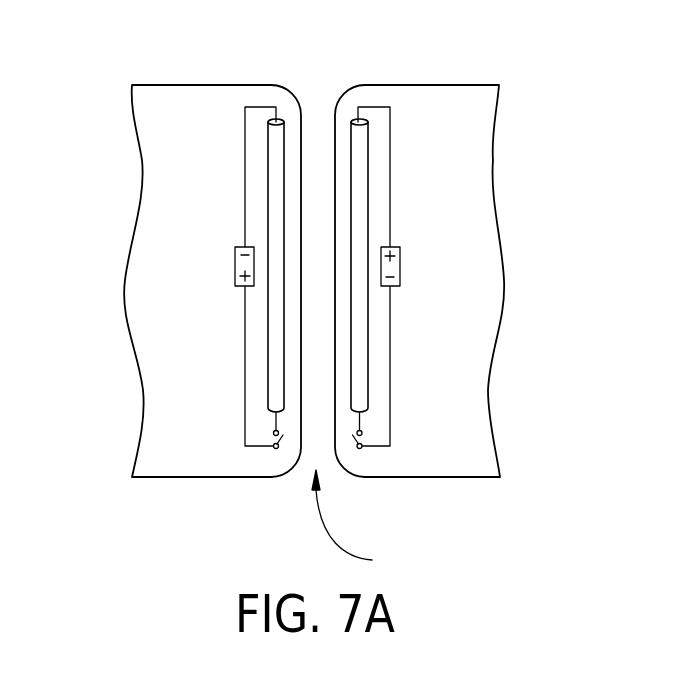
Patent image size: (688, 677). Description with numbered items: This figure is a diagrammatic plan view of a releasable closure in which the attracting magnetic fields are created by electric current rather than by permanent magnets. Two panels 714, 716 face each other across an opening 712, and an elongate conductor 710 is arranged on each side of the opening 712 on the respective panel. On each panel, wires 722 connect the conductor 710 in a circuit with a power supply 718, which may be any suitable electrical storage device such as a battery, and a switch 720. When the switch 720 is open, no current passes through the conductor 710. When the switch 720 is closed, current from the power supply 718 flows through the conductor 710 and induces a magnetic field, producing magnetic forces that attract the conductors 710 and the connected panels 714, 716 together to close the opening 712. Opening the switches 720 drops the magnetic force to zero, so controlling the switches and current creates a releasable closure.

The elongate conductor 710 is at (337, 140).
The opening 712 is at (367, 524).
The panel 714 is at (142, 393).
The panel 716 is at (488, 394).
The power supply 718 is at (235, 265).
The switch 720 is at (276, 449).
The wire 722 is at (245, 120).